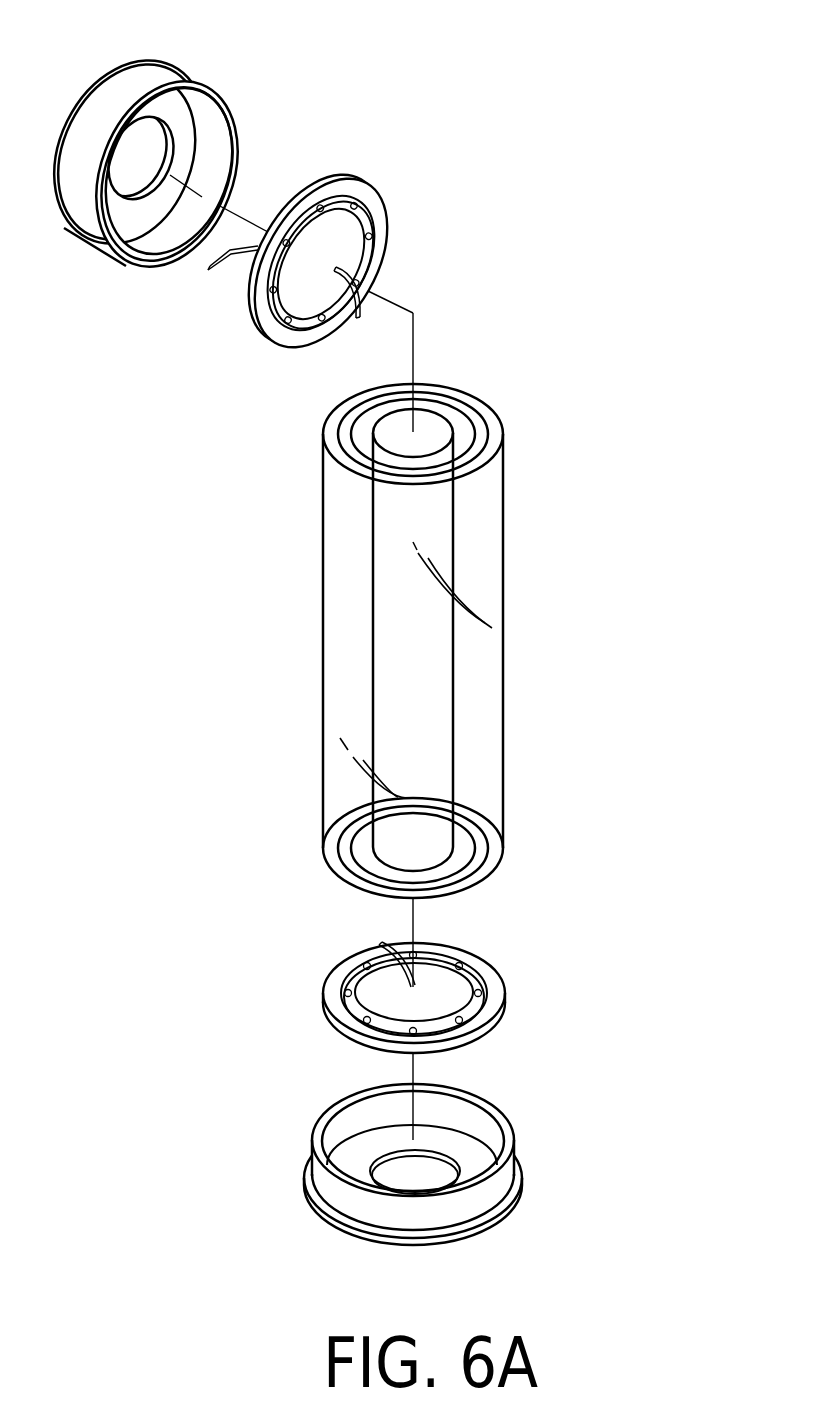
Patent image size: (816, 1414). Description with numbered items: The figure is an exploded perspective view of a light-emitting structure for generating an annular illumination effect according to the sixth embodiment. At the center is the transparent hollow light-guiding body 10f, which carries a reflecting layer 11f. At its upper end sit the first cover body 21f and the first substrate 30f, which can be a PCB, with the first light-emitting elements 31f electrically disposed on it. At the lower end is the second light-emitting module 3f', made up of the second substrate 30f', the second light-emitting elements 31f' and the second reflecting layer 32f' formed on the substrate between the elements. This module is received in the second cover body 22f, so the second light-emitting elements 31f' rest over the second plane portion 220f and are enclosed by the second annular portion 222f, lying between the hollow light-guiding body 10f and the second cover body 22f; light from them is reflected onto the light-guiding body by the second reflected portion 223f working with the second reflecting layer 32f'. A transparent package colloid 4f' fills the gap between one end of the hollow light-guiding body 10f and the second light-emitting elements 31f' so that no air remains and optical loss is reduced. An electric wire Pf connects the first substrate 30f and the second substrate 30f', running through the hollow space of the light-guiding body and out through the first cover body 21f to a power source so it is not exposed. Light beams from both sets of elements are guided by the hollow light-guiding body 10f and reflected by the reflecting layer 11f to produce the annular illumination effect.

The first cover body 21f is at (218, 79).
The first substrate 30f is at (341, 189).
The first light-emitting elements 31f is at (358, 205).
The electric wire Pf is at (212, 284).
The hollow light-guiding body 10f is at (490, 613).
The reflecting layer 11f is at (453, 550).
The second light-emitting module 3f' is at (509, 974).
The second substrate 30f' is at (470, 993).
The second light-emitting elements 31f' is at (479, 988).
The second reflecting layer 32f' is at (486, 956).
The transparent package colloid 4f' is at (352, 989).
The second cover body 22f is at (664, 1060).
The second reflected portion 223f is at (468, 1122).
The second plane portion 220f is at (472, 1162).
The second annular portion 222f is at (492, 1187).